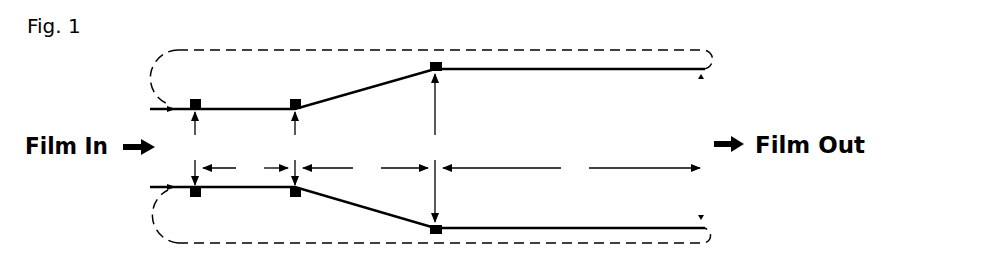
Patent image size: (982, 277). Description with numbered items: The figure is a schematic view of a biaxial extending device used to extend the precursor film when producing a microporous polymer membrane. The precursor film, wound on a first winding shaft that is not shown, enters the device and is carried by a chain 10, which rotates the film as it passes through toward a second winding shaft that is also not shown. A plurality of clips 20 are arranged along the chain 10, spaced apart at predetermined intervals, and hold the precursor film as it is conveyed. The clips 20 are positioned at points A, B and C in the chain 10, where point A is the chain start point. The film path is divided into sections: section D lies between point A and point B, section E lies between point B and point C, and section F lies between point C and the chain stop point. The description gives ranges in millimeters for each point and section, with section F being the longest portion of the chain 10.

The chain 10 is at (431, 163).
The clips 20 is at (421, 65).
The point A is at (195, 148).
The point B is at (294, 148).
The point C is at (435, 148).
The section D is at (245, 169).
The section E is at (365, 169).
The section F is at (571, 169).